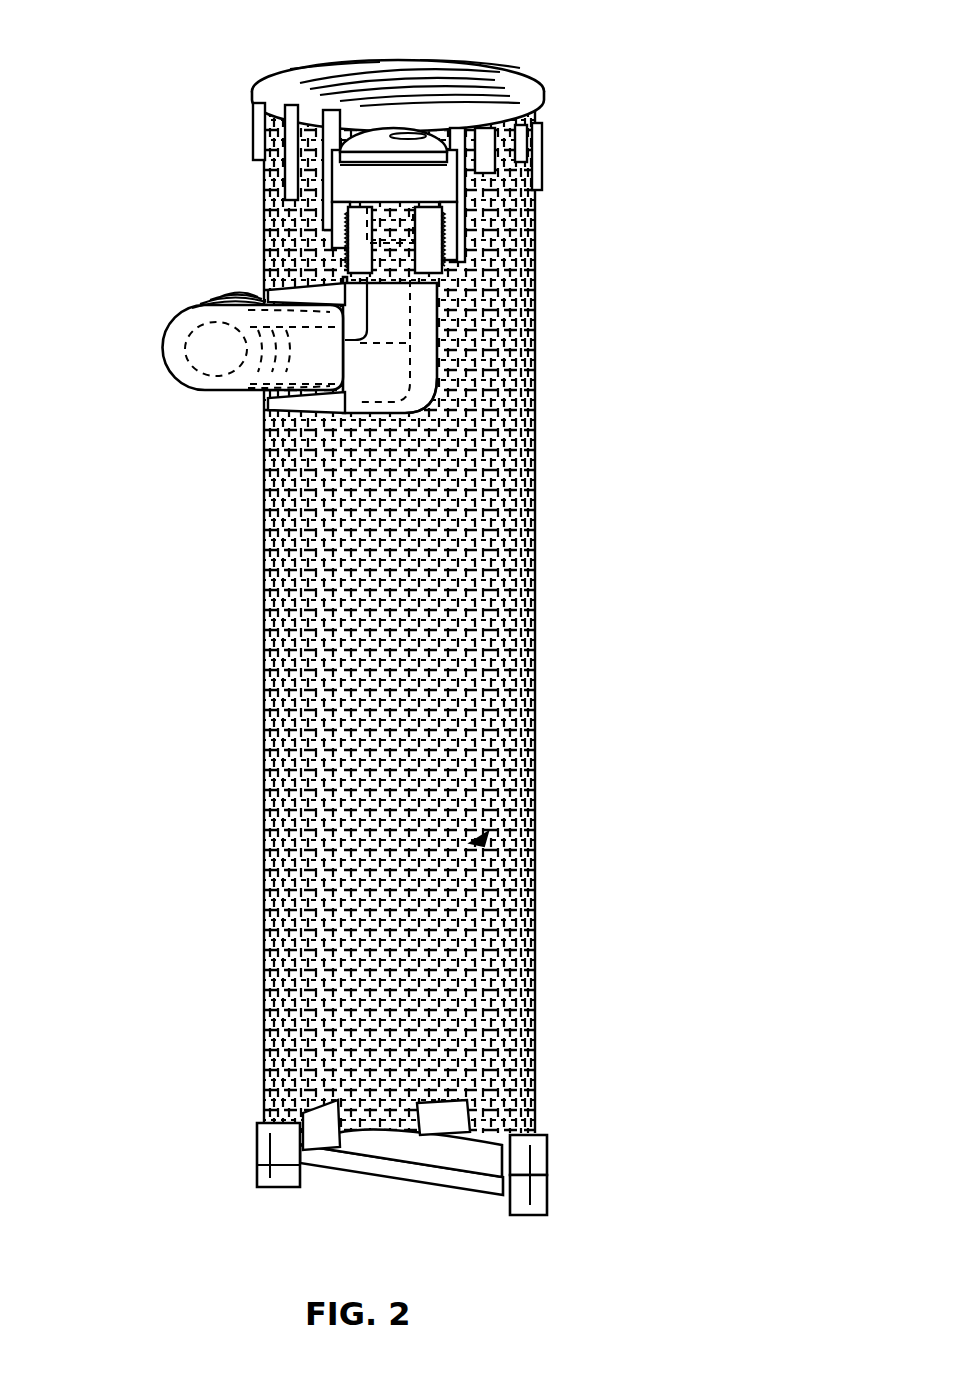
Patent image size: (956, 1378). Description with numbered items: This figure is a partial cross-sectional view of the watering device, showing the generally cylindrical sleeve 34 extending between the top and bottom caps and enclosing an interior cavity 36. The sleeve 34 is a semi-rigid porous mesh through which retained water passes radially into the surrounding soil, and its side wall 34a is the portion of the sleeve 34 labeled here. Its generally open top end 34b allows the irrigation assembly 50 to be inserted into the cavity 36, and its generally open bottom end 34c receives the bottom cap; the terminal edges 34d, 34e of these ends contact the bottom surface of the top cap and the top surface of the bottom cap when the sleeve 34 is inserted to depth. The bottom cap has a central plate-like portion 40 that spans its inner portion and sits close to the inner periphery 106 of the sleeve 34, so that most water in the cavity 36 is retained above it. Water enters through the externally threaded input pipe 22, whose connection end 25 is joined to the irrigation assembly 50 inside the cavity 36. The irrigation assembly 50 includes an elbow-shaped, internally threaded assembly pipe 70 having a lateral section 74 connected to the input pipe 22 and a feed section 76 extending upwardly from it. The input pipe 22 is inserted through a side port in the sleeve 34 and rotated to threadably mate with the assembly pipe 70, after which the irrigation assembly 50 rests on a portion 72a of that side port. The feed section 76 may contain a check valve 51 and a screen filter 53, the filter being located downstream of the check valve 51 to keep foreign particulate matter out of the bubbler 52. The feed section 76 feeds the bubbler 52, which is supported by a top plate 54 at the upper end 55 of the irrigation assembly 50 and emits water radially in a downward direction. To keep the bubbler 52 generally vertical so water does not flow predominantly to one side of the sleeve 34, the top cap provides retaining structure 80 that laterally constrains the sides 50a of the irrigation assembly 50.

The input pipe 22 is at (162, 346).
The connection end 25 is at (262, 445).
The sleeve 34 is at (449, 619).
The sleeve side wall 34a is at (530, 915).
The top end 34b is at (546, 152).
The bottom end 34c is at (540, 1125).
The terminal edge 34d is at (556, 124).
The terminal edge 34e is at (521, 1203).
The interior cavity 36 is at (480, 838).
The central plate-like portion 40 is at (443, 1172).
The irrigation assembly 50 is at (380, 154).
The sides 50a is at (330, 187).
The check valve 51 is at (437, 400).
The bubbler 52 is at (433, 190).
The screen filter 53 is at (468, 333).
The top plate 54 is at (387, 147).
The upper end 55 is at (340, 160).
The assembly pipe 70 is at (352, 369).
The portion of the side port 72a is at (267, 402).
The lateral section 74 is at (270, 297).
The feed section 76 is at (452, 352).
The retaining structure 80 is at (362, 172).
The inner periphery 106 is at (380, 1133).